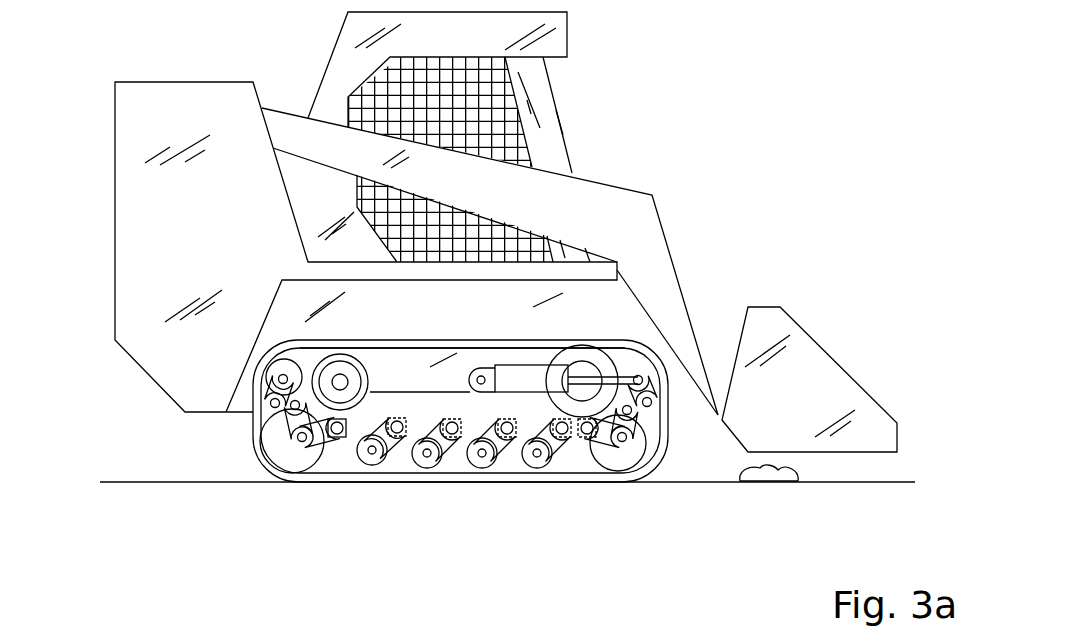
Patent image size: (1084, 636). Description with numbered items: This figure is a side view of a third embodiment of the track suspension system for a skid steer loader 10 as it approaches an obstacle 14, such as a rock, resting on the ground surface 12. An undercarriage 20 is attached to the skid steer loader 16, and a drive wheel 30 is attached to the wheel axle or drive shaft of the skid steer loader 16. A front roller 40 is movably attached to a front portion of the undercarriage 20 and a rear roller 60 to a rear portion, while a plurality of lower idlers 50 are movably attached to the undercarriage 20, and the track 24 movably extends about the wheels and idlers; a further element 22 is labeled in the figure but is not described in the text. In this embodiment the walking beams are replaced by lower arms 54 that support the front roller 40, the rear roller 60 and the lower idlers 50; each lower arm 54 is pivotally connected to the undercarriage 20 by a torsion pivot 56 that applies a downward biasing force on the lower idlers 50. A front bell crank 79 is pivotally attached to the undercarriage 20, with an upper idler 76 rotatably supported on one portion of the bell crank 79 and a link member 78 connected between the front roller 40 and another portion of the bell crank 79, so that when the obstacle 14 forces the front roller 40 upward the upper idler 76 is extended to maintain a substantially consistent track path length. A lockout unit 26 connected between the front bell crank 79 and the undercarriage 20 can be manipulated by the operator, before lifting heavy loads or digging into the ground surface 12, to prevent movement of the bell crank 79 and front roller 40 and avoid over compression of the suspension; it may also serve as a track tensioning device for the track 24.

The track suspension system for a skid steer loader 10 is at (668, 153).
The ground surface 12 is at (117, 482).
The obstacle 14 is at (800, 490).
The skid steer loader 16 is at (312, 76).
The undercarriage 20 is at (530, 430).
The front idler wheel 22 is at (418, 385).
The track 24 is at (465, 346).
The lockout unit 26 is at (527, 366).
The drive wheel 30 is at (300, 350).
The front roller 40 is at (625, 445).
The lower idlers 50 is at (385, 453).
The lower arms 54 is at (340, 445).
The torsion pivot 56 is at (580, 440).
The rear roller 60 is at (300, 452).
The upper idler 76 is at (275, 383).
The link member 78 is at (298, 438).
The bell crank 79 is at (272, 405).